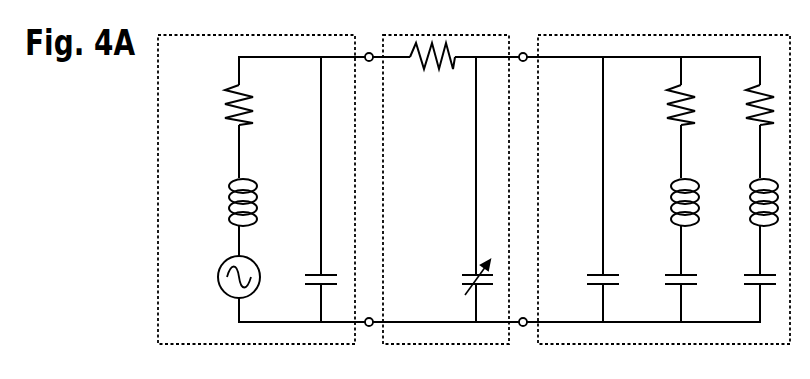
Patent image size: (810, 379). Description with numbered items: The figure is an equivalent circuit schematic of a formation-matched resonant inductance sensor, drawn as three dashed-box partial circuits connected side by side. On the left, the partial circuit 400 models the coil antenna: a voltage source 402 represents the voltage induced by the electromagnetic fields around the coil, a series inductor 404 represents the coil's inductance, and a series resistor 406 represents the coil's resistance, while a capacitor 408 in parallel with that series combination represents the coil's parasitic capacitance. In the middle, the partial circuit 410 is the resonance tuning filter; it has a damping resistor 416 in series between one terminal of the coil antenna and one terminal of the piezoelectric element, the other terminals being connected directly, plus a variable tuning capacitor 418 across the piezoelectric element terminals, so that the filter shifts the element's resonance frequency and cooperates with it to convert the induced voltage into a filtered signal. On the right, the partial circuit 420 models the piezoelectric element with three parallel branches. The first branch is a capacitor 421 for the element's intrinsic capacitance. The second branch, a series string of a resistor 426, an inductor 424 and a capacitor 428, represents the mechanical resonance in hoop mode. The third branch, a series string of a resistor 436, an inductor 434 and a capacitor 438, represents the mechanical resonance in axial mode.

The partial circuit 400 is at (207, 343).
The voltage source 402 is at (220, 285).
The series inductor 404 is at (229, 219).
The series resistor 406 is at (226, 115).
The capacitor 408 is at (311, 285).
The partial circuit 410 is at (432, 343).
The damping resistor 416 is at (441, 64).
The variable tuning capacitor 418 is at (468, 273).
The partial circuit 420 is at (589, 343).
The capacitor 421 is at (590, 288).
The inductor 424 is at (671, 219).
The resistor 426 is at (668, 116).
The capacitor 428 is at (669, 288).
The inductor 434 is at (750, 219).
The resistor 436 is at (746, 116).
The capacitor 438 is at (747, 288).